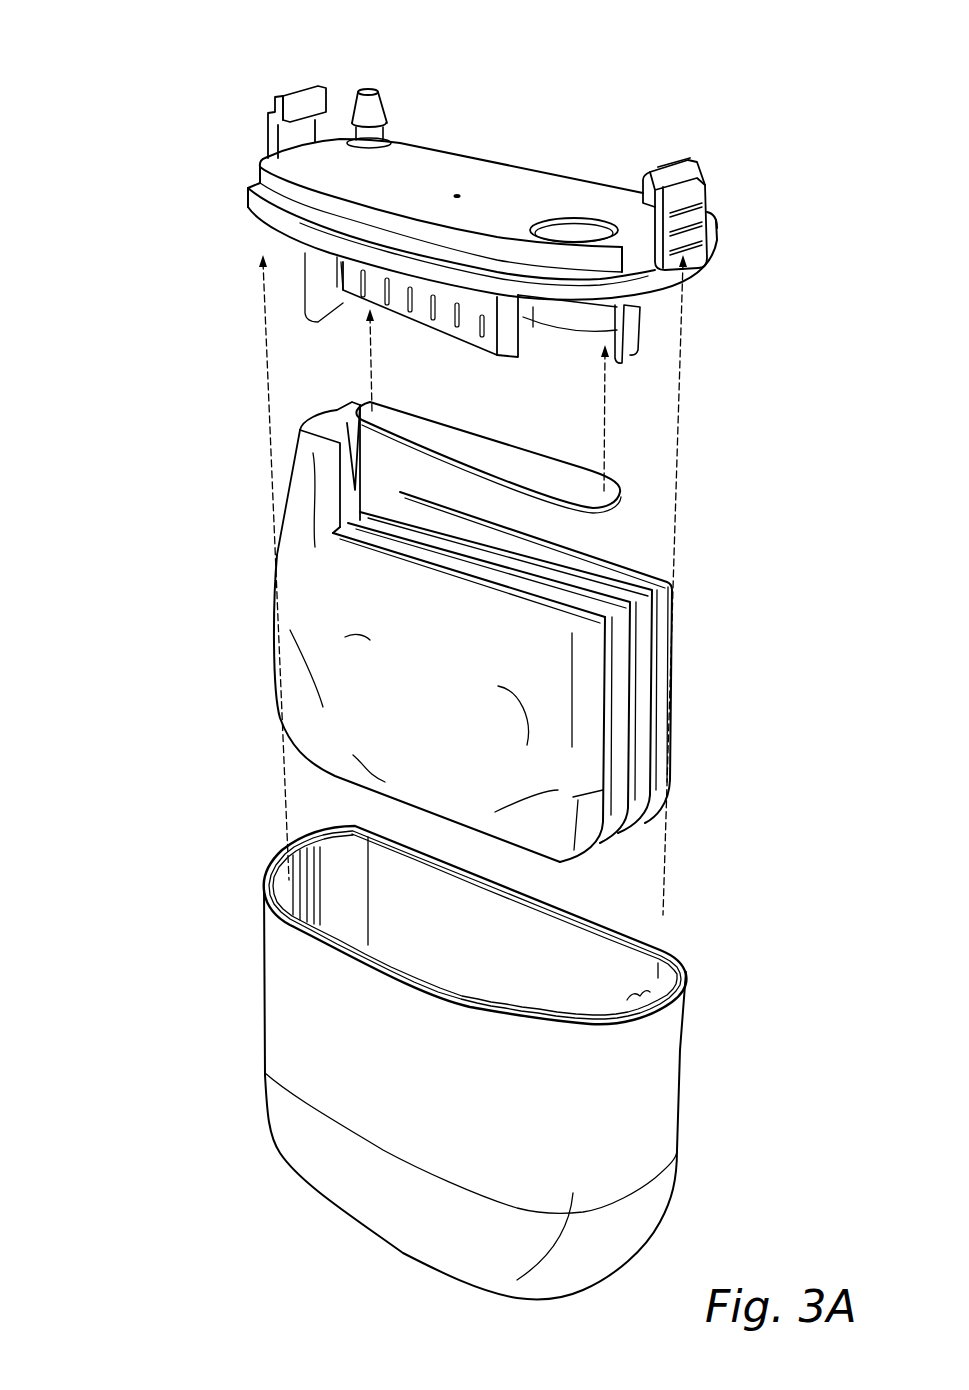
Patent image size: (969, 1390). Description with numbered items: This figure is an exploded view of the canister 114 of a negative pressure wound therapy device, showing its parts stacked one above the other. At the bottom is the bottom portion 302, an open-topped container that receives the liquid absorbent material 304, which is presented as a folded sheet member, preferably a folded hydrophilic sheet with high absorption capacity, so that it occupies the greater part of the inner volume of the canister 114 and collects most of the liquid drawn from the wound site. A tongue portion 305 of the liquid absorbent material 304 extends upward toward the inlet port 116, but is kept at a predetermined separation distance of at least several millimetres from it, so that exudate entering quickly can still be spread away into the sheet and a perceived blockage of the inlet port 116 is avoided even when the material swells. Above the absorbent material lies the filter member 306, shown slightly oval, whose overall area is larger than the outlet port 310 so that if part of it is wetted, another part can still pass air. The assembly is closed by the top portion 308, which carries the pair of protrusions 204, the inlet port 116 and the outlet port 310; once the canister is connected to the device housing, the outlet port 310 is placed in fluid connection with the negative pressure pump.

The canister 114 is at (156, 494).
The inlet port 116 is at (375, 112).
The pair of protrusions 204 is at (290, 92).
The bottom portion 302 is at (645, 1038).
The liquid absorbent material 304 is at (652, 580).
The tongue portion 305 is at (340, 412).
The filter member 306 is at (553, 472).
The top portion 308 is at (712, 270).
The outlet port 310 is at (573, 232).